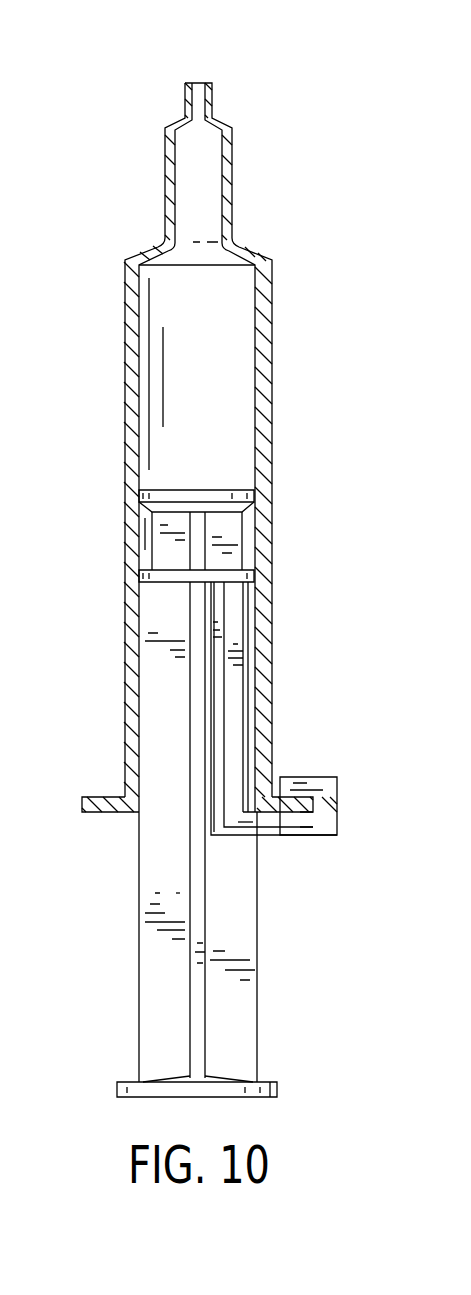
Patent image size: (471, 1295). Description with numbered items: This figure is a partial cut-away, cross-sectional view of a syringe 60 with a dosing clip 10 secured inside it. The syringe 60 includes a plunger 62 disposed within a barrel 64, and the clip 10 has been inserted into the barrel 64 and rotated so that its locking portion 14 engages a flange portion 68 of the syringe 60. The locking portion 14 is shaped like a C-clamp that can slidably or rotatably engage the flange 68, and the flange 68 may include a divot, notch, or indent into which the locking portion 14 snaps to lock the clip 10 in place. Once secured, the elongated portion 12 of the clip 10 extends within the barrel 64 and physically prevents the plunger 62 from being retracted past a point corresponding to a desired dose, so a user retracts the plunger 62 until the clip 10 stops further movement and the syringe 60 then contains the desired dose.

The syringe 60 is at (268, 97).
The barrel 64 is at (267, 393).
The plunger 62 is at (247, 1020).
The clip 10 is at (351, 762).
The elongated portion 12 is at (233, 643).
The locking portion 14 is at (338, 803).
The flange portion 68 is at (283, 798).